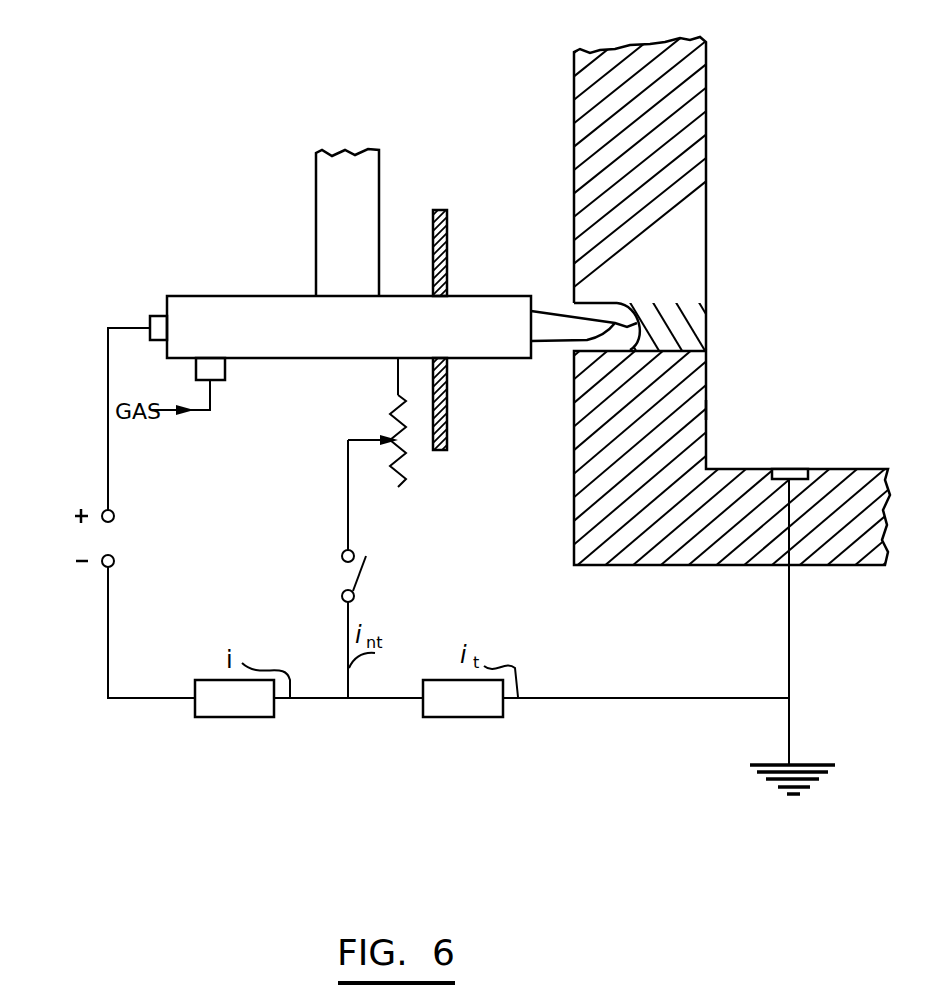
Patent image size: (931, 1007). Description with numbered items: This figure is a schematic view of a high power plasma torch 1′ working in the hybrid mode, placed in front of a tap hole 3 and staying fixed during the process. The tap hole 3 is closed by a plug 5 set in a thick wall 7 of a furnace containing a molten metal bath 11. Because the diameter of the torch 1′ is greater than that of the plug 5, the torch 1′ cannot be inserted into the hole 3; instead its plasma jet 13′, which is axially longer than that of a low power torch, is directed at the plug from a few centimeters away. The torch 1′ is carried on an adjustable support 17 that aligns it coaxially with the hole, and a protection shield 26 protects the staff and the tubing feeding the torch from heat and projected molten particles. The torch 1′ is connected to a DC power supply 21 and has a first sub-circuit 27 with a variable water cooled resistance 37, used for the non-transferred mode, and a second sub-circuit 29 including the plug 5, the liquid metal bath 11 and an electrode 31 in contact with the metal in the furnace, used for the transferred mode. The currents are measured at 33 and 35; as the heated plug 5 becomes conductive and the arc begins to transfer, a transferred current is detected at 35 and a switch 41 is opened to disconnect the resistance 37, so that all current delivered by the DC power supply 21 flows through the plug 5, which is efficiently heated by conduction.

The thick wall 7 is at (700, 82).
The plug 5 is at (708, 326).
The second sub-circuit 29 is at (654, 611).
The molten metal bath 11 is at (829, 364).
The electrode 31 is at (808, 434).
The high power plasma torch 1′ is at (475, 292).
The tap hole 3 is at (585, 342).
The plasma jet 13′ is at (550, 308).
The support 17 is at (368, 183).
The protection shield 26 is at (450, 424).
The DC power supply 21 is at (80, 546).
The first sub-circuit 27 is at (200, 600).
The variable water cooled resistance 37 is at (396, 488).
The switch 41 is at (360, 575).
The current measuring point 33 is at (234, 718).
The current measuring point 35 is at (462, 718).